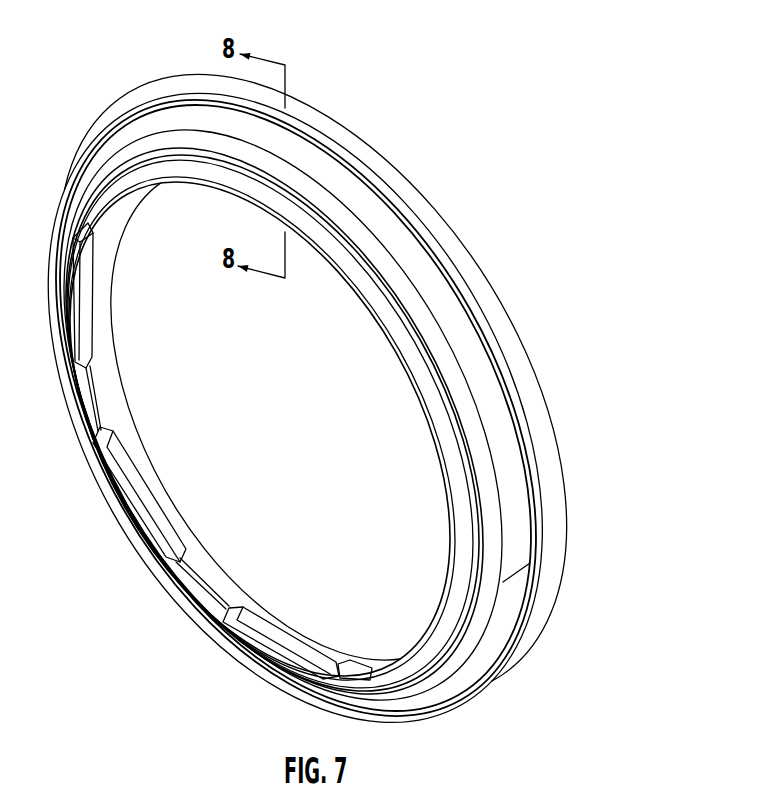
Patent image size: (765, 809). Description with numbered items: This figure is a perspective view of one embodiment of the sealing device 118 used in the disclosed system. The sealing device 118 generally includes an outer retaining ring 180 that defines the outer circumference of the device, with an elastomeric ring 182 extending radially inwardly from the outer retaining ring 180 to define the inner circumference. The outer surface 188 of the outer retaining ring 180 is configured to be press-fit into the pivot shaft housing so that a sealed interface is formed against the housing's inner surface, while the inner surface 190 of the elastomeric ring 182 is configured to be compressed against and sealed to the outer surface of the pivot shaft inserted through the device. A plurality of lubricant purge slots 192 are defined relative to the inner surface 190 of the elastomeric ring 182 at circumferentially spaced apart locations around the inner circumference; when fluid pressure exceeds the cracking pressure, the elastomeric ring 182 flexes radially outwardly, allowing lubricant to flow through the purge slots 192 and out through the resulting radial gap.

The sealing device 118 is at (439, 97).
The outer retaining ring 180 is at (483, 262).
The outer surface 188 is at (410, 197).
The elastomeric ring 182 is at (367, 309).
The inner surface 190 is at (152, 513).
The lubricant purge slots 192 is at (93, 236).